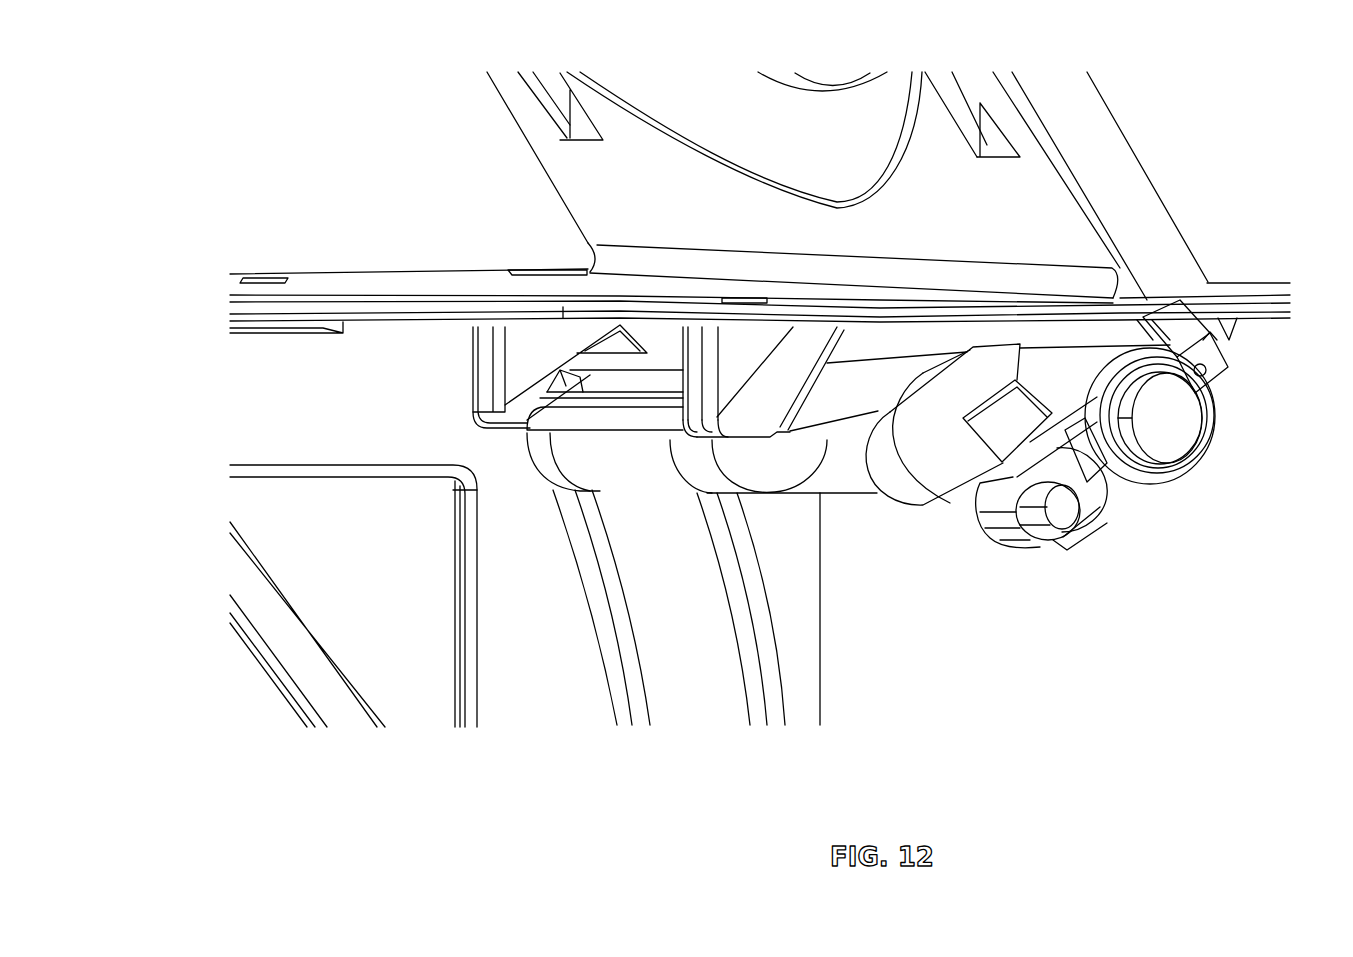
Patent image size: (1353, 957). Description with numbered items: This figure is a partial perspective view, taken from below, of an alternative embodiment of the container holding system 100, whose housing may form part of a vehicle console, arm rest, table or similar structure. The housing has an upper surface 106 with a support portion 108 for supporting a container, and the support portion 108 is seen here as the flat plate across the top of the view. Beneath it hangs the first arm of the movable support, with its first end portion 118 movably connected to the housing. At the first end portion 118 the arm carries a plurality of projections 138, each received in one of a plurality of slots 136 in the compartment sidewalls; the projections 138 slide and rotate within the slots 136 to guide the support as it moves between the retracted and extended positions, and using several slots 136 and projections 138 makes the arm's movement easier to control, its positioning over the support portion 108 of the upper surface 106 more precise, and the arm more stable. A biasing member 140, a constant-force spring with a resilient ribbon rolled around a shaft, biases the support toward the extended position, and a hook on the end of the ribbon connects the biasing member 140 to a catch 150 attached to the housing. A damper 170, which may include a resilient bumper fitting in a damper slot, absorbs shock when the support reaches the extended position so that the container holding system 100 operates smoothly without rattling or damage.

The container holding system 100 is at (210, 427).
The upper surface 106 is at (448, 310).
The support portion 108 is at (390, 286).
The first end portion 118 is at (1145, 236).
The slots 136 is at (763, 660).
The projections 138 is at (1065, 508).
The biasing member 140 is at (830, 468).
The catch 150 is at (588, 492).
The damper 170 is at (1167, 418).